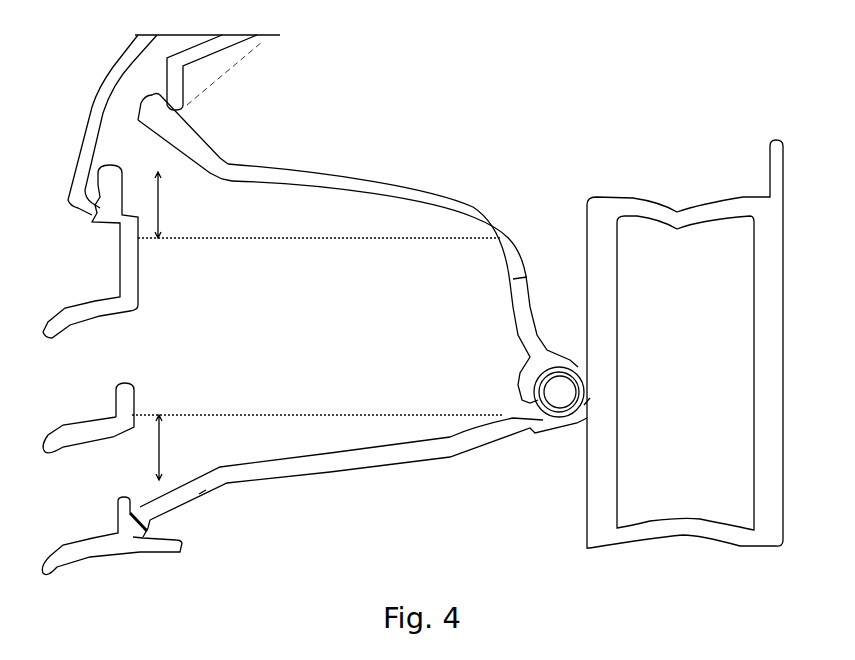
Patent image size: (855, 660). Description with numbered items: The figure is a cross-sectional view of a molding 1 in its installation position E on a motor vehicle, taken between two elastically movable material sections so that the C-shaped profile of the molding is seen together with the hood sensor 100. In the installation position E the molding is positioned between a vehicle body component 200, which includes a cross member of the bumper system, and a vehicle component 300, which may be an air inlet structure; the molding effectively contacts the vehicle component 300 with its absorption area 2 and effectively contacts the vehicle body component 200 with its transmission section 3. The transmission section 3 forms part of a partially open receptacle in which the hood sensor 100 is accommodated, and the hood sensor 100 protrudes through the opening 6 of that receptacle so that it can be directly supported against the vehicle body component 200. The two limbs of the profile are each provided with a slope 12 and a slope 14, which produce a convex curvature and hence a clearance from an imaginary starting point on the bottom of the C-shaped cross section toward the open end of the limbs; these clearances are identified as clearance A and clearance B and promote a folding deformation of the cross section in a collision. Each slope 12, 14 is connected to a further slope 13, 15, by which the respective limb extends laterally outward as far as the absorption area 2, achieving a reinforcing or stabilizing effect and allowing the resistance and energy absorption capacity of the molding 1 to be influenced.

The molding 1 is at (427, 175).
The absorption area 2 is at (122, 104).
The transmission section 3 is at (590, 398).
The opening 6 is at (543, 393).
The slope 12 is at (326, 172).
The slope 13 is at (215, 155).
The slope 14 is at (318, 483).
The slope 15 is at (202, 495).
The hood sensor 100 is at (527, 392).
The vehicle body component 200 is at (670, 207).
The vehicle component 300 is at (118, 263).
The clearance A is at (161, 203).
The clearance B is at (163, 442).
The installation position E is at (445, 507).